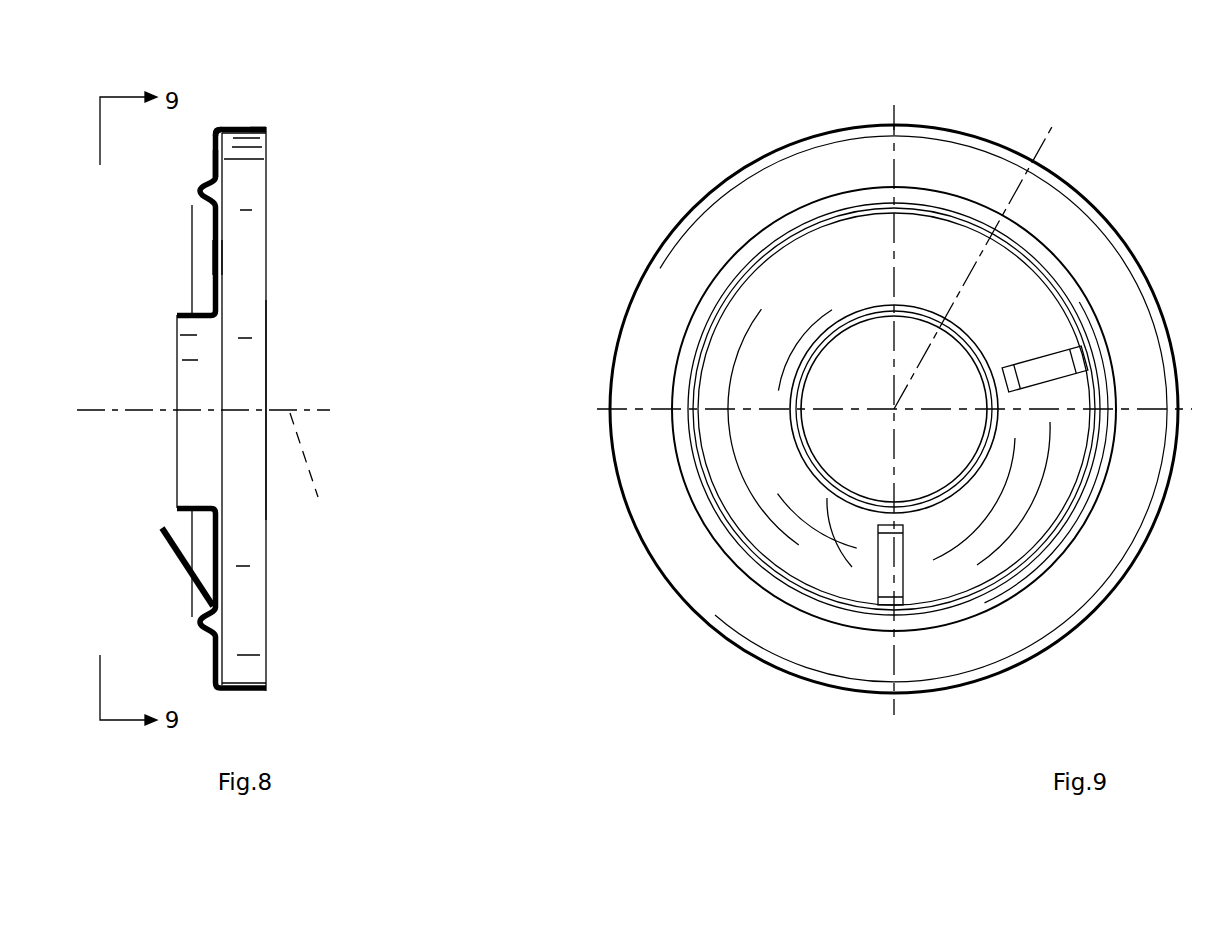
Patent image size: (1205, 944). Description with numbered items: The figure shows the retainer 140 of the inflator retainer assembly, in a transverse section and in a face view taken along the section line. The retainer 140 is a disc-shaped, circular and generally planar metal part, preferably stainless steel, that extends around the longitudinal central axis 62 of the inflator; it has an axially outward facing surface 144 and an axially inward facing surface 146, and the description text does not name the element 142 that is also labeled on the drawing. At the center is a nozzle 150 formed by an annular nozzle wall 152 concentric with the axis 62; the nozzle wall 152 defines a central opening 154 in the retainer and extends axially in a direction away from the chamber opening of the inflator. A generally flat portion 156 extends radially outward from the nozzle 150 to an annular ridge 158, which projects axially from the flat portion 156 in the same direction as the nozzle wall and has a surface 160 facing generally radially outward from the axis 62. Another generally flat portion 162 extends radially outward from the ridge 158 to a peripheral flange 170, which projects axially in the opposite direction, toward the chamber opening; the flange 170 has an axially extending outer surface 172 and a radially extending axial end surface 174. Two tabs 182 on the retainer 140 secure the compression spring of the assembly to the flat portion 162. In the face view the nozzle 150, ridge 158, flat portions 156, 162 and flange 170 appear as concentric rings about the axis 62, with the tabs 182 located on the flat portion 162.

In FIG. 8, the longitudinal central axis 62 is at (312, 472).
In FIG. 9, the longitudinal central axis 62 is at (987, 250).
In FIG. 8, the retainer 140 is at (296, 375).
In FIG. 9, the retainer 140 is at (864, 91).
In FIG. 8, the disc body 142 is at (236, 288).
In FIG. 8, the axially outward facing surface 144 is at (220, 237).
In FIG. 8, the axially inward facing surface 146 is at (220, 257).
In FIG. 8, the nozzle 150 is at (164, 377).
In FIG. 9, the nozzle 150 is at (961, 505).
In FIG. 8, the annular nozzle wall 152 is at (180, 315).
In FIG. 9, the annular nozzle wall 152 is at (913, 313).
In FIG. 8, the central opening 154 is at (192, 465).
In FIG. 9, the central opening 154 is at (957, 428).
In FIG. 8, the generally flat portion 156 is at (223, 257).
In FIG. 9, the generally flat portion 156 is at (826, 262).
In FIG. 8, the annular ridge 158 is at (177, 199).
In FIG. 9, the annular ridge 158 is at (733, 260).
In FIG. 8, the surface 160 is at (210, 180).
In FIG. 9, the surface 160 is at (670, 457).
In FIG. 8, the generally flat portion 162 is at (267, 160).
In FIG. 9, the generally flat portion 162 is at (680, 532).
In FIG. 8, the peripheral flange 170 is at (256, 113).
In FIG. 9, the peripheral flange 170 is at (703, 639).
In FIG. 8, the outer surface 172 is at (242, 125).
In FIG. 9, the outer surface 172 is at (775, 667).
In FIG. 8, the axial end surface 174 is at (268, 127).
In FIG. 8, the tabs 182 is at (200, 578).
In FIG. 9, the tabs 182 is at (1048, 353).